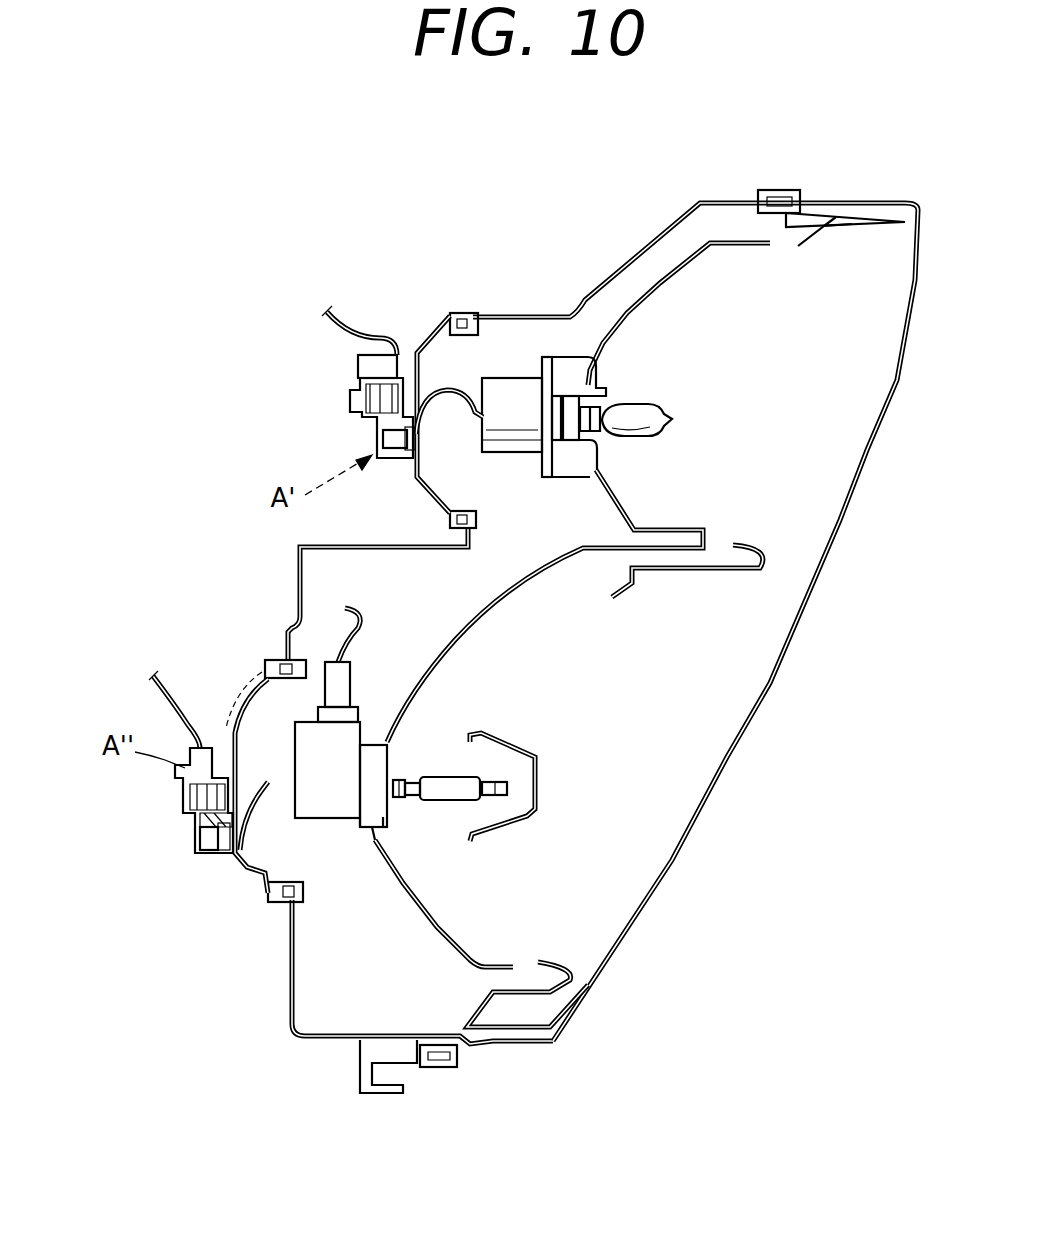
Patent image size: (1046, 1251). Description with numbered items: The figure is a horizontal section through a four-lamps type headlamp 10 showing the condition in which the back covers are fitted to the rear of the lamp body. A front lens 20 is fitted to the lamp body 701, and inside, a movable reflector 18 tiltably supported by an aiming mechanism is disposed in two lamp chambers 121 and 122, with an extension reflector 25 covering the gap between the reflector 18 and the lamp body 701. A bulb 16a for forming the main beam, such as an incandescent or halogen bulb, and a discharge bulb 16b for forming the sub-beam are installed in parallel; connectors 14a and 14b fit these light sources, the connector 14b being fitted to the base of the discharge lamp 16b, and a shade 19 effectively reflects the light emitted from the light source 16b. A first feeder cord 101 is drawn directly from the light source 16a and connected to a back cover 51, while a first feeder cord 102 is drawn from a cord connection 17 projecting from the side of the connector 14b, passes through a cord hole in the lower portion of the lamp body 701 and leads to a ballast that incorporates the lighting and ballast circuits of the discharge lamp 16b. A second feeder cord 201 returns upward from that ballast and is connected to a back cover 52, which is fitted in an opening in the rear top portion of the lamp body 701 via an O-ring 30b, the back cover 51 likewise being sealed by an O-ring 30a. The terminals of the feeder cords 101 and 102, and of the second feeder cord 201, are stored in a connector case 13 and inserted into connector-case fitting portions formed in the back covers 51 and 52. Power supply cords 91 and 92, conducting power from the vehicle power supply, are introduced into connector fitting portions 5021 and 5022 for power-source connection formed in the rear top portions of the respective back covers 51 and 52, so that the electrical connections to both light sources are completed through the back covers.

The headlamp 10 is at (556, 215).
The connector case 13 is at (384, 460).
The connector 14a is at (505, 378).
The connector 14b is at (318, 812).
The bulb 16a is at (672, 422).
The bulb 16b is at (460, 800).
The cord connection 17 is at (352, 688).
The movable reflector 18 is at (658, 272).
The shade 19 is at (535, 812).
The front lens 20 is at (775, 685).
The extension reflector 25 is at (843, 232).
The O-ring 30a is at (460, 316).
The O-ring 30b is at (282, 660).
The back cover 51 is at (418, 344).
The back cover 52 is at (194, 862).
The power supply cord 91 is at (355, 322).
The power supply cord 92 is at (170, 698).
The first feeder cord 101 is at (434, 428).
The first feeder cord 102 is at (362, 615).
The lamp chamber 121 is at (728, 368).
The lamp chamber 122 is at (600, 733).
The second feeder cord 201 is at (240, 862).
The lamp body 701 is at (697, 198).
The connector fitting portion 5021 is at (370, 420).
The connector fitting portion 5022 is at (190, 812).